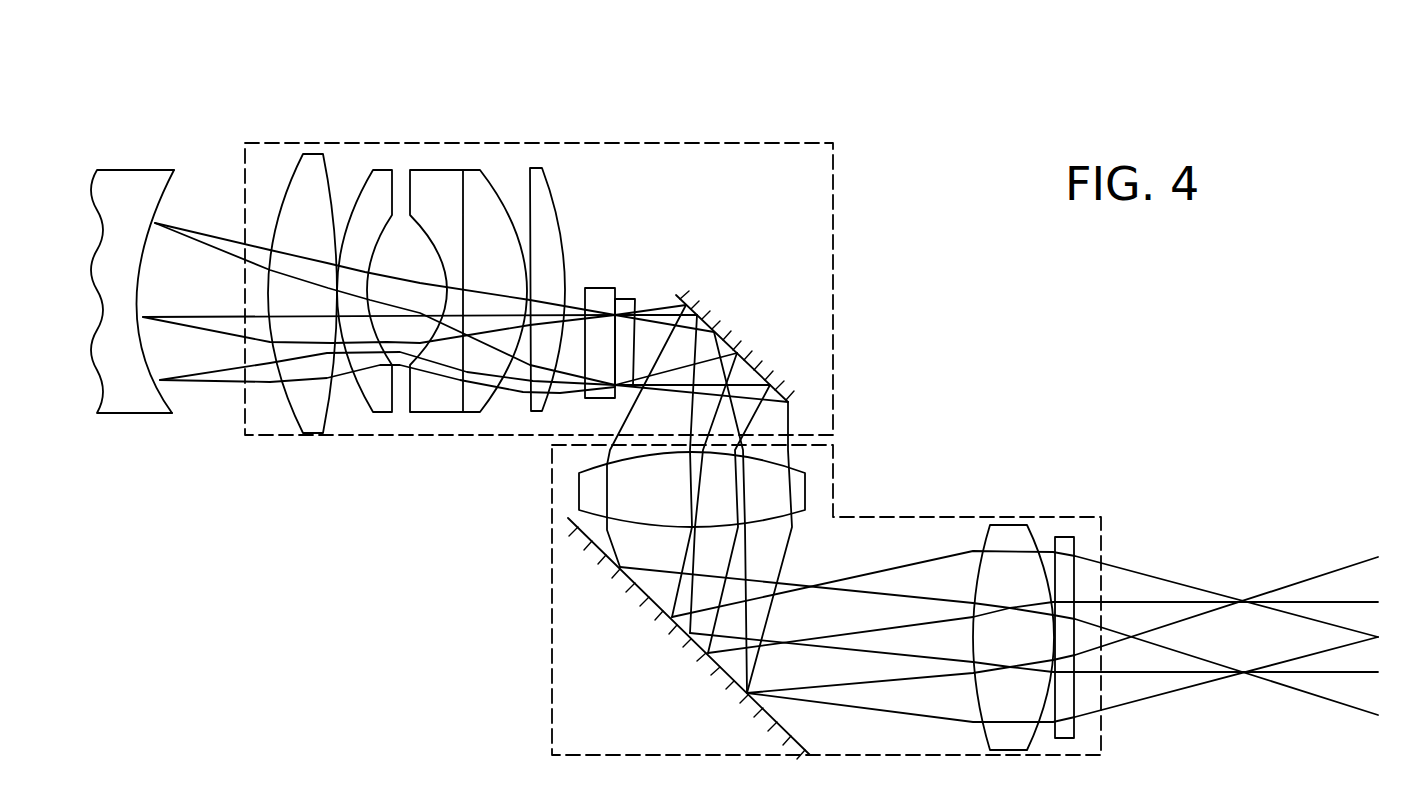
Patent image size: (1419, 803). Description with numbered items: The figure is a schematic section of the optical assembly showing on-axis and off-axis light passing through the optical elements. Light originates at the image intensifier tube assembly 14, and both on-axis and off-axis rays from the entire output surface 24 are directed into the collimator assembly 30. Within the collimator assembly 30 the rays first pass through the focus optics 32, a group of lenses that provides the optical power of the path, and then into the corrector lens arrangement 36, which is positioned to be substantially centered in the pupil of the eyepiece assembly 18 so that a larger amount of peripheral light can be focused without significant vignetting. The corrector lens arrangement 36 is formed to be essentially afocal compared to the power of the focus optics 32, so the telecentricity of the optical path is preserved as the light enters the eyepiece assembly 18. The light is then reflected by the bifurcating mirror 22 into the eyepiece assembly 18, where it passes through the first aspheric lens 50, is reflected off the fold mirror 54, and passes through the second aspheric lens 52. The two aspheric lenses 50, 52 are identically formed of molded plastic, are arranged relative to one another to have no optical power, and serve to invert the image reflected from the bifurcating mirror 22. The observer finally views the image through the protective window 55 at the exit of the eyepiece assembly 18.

The image intensifier tube assembly 14 is at (133, 185).
The output surface 24 is at (165, 383).
The collimator assembly 30 is at (512, 140).
The focus optics 32 is at (552, 408).
The corrector lens arrangement 36 is at (614, 280).
The bifurcating mirror 22 is at (772, 328).
The eyepiece assembly 18 is at (903, 515).
The first aspheric lens 50 is at (597, 487).
The fold mirror 54 is at (635, 711).
The second aspheric lens 52 is at (1008, 535).
The protective window 55 is at (1065, 543).